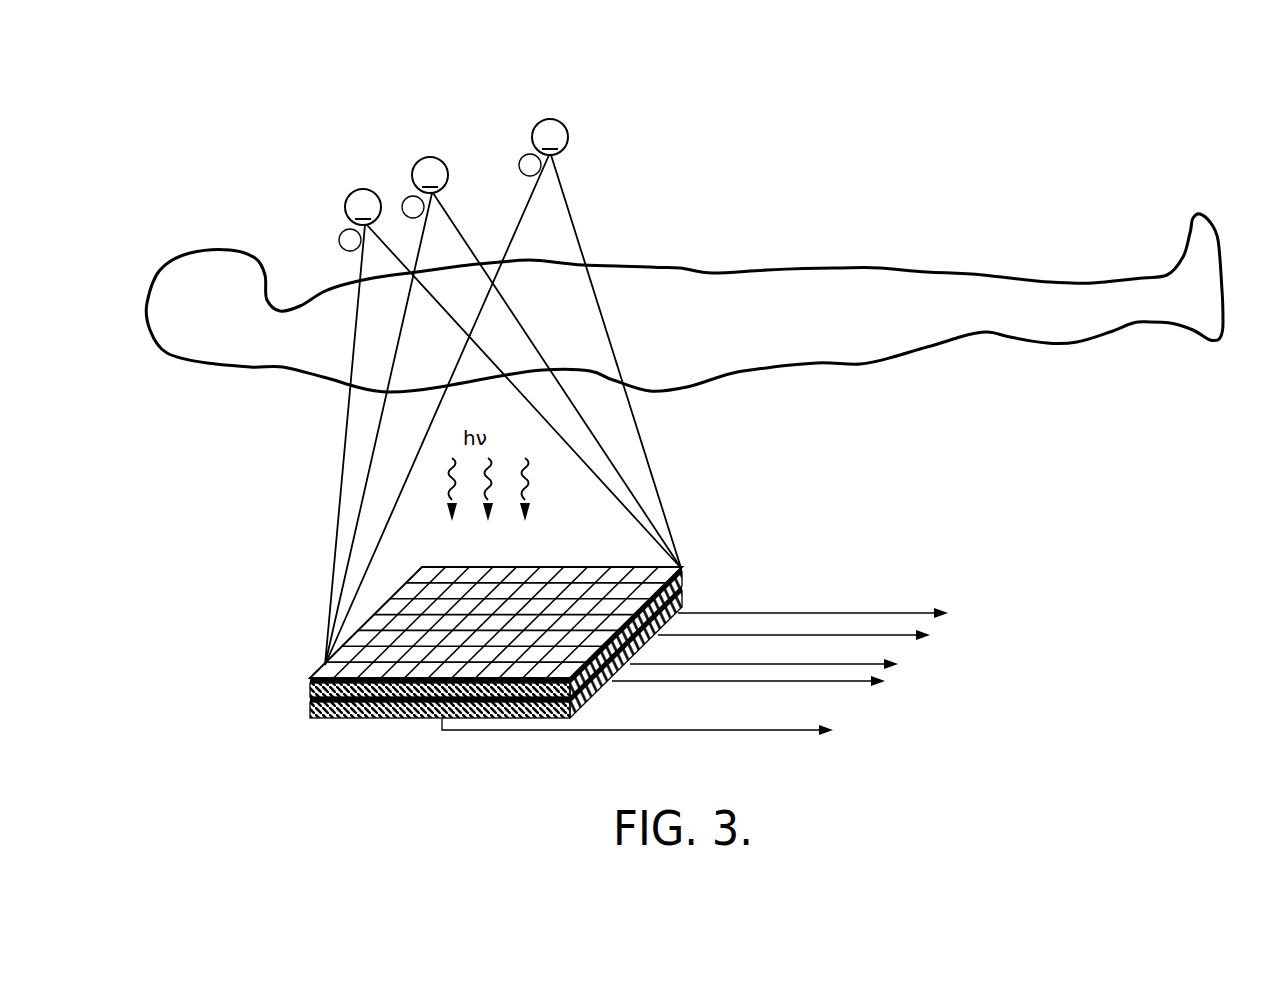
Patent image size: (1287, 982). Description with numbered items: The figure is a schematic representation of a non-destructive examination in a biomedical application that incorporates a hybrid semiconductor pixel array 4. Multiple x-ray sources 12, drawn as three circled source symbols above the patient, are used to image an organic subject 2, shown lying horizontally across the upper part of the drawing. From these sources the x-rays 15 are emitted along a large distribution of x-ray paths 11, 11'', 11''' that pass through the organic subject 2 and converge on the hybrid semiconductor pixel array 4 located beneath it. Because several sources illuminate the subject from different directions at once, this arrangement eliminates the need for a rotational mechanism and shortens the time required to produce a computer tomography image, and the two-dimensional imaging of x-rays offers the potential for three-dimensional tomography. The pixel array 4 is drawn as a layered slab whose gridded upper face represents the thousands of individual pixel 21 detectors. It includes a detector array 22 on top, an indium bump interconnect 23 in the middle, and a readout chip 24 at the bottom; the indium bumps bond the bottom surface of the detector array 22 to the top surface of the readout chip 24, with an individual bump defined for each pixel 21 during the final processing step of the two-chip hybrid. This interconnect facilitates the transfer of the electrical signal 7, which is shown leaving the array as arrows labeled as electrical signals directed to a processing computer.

The organic subject 2 is at (997, 201).
The x-ray sources 12 is at (416, 54).
The x-ray path 11 is at (357, 194).
The x-ray path 11'' is at (425, 156).
The x-ray path 11''' is at (543, 119).
The x-rays 15 is at (348, 477).
The pixel 21 is at (475, 574).
The detector array 22 is at (309, 682).
The indium bump interconnect 23 is at (309, 700).
The readout chip 24 is at (309, 716).
The hybrid semiconductor pixel array 4 is at (458, 652).
The electrical signal 7 is at (891, 759).